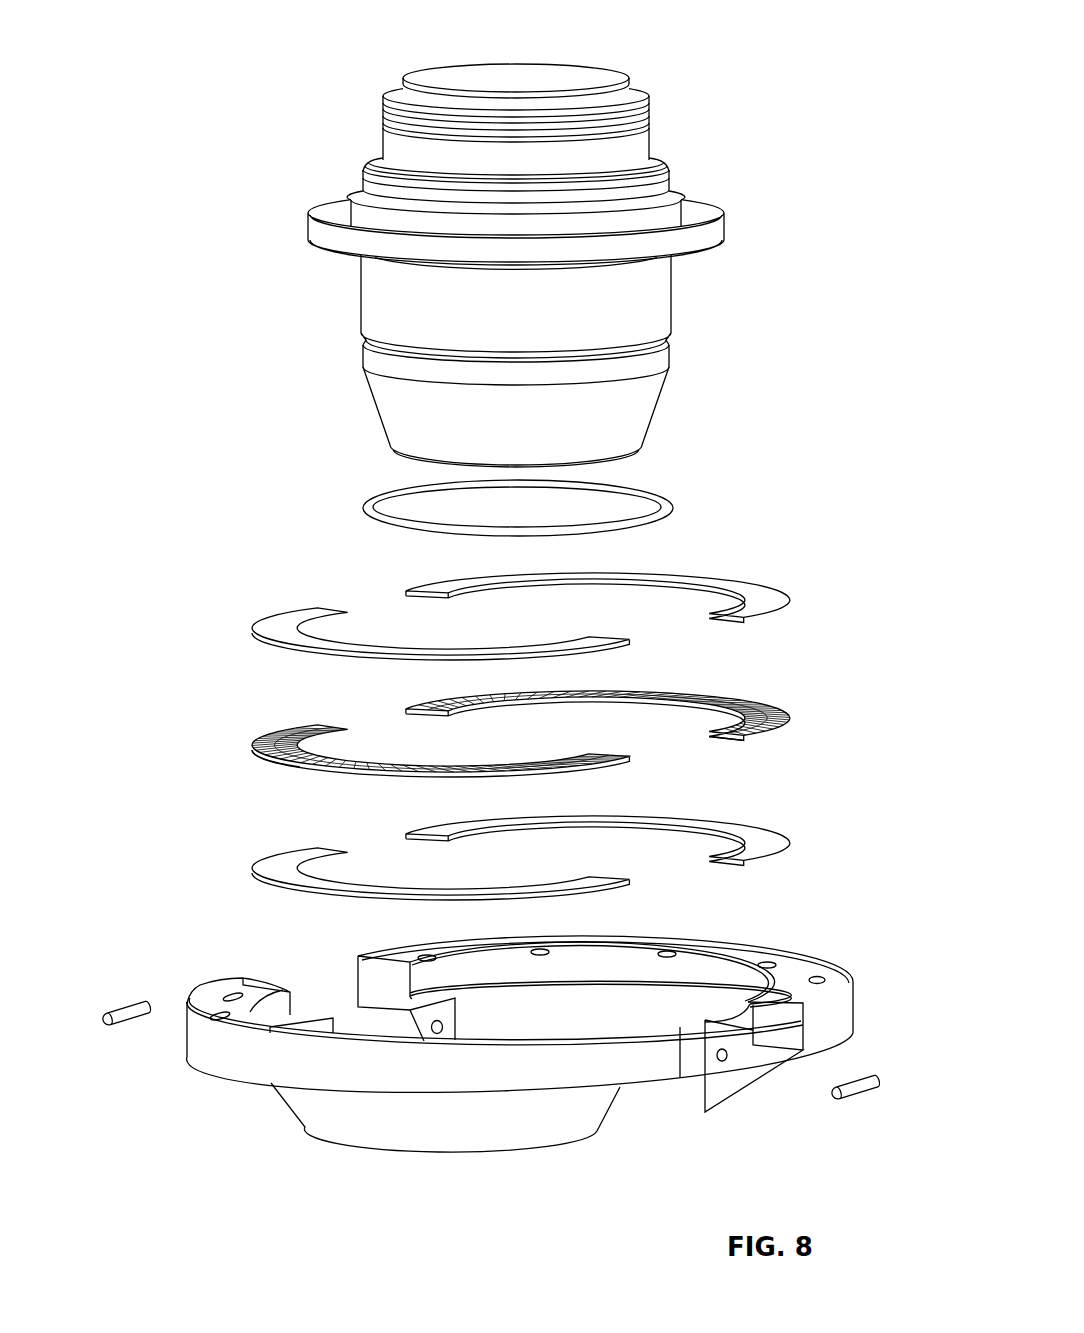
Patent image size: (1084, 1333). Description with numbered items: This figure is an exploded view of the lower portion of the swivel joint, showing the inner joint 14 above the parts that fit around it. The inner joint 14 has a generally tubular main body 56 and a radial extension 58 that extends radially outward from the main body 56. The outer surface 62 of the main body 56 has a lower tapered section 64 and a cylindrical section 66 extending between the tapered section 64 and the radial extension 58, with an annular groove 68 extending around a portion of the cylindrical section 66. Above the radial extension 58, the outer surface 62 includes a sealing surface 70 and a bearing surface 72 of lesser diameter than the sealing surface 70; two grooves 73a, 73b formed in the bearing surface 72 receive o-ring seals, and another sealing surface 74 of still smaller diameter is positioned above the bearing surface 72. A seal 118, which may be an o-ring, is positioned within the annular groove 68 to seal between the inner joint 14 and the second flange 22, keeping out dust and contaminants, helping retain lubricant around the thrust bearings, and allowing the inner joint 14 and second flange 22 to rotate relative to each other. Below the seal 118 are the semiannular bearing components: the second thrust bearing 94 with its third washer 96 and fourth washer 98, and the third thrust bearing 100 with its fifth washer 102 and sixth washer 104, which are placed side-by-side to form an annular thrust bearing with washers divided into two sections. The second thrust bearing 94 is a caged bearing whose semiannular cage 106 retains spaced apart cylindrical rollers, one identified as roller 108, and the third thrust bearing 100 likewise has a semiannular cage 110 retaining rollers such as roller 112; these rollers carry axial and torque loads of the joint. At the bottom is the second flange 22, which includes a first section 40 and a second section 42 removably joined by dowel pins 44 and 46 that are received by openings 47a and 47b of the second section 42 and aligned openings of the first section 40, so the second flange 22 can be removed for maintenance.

The inner joint 14 is at (308, 222).
The second flange 22 is at (497, 1150).
The first section 40 is at (564, 1076).
The second section 42 is at (858, 1000).
The dowel pin 44 is at (110, 1003).
The dowel pin 46 is at (885, 1082).
The opening 47a is at (435, 1020).
The opening 47b is at (725, 1062).
The main body 56 is at (516, 294).
The radial extension 58 is at (722, 232).
The outer surface 62 is at (672, 353).
The tapered section 64 is at (655, 400).
The cylindrical section 66 is at (372, 298).
The annular groove 68 is at (368, 344).
The sealing surface 70 is at (668, 180).
The bearing surface 72 is at (502, 121).
The groove 73a is at (388, 111).
The groove 73b is at (388, 125).
The sealing surface 74 is at (408, 80).
The second thrust bearing 94 is at (397, 754).
The third washer 96 is at (253, 628).
The fourth washer 98 is at (252, 870).
The third thrust bearing 100 is at (647, 727).
The fifth washer 102 is at (790, 604).
The sixth washer 104 is at (790, 845).
The semiannular cage 106 is at (268, 770).
The cylindrical roller 108 is at (283, 730).
The semiannular cage 110 is at (740, 745).
The cylindrical roller 112 is at (748, 700).
The seal 118 is at (365, 508).